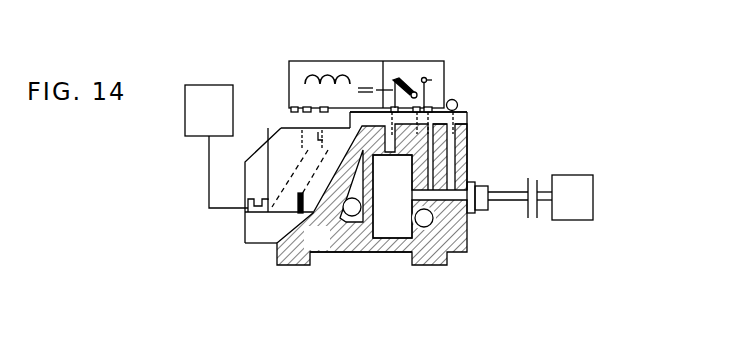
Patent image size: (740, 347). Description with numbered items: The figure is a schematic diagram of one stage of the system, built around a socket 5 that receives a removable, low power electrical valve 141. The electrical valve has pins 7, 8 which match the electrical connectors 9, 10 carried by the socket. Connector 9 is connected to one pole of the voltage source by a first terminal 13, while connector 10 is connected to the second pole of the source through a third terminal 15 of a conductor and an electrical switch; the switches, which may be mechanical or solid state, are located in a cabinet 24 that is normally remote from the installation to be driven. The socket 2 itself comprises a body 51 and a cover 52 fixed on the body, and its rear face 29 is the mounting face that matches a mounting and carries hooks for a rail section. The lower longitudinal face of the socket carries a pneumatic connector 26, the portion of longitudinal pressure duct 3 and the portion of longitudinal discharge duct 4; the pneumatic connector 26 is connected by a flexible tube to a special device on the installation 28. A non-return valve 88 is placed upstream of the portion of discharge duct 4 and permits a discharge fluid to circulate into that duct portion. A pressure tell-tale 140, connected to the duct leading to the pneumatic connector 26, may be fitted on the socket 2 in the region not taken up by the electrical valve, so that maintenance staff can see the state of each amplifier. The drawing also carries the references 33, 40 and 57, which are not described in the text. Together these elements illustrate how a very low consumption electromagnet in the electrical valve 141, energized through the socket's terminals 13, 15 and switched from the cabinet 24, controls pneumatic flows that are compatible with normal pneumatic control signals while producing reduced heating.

The socket 2 is at (577, 31).
The portion of longitudinal pressure duct 3 is at (421, 228).
The portion of longitudinal discharge duct 4 is at (349, 228).
The socket 5 is at (536, 97).
The pin 7 is at (328, 140).
The pin 8 is at (292, 140).
The electrical connector 9 is at (317, 172).
The electrical connector 10 is at (290, 178).
The first terminal 13 is at (300, 204).
The third terminal 15 is at (257, 200).
The cabinet 24 is at (199, 121).
The pneumatic connector 26 is at (485, 201).
The installation 28 is at (562, 206).
The rear face 29 is at (324, 254).
The coil 33 is at (376, 62).
The switch 40 is at (445, 75).
The body 51 is at (460, 145).
The cover 52 is at (467, 118).
The valve chamber 57 is at (380, 208).
The non-return valve 88 is at (307, 248).
The pressure tell-tale 140 is at (457, 103).
The low power electrical valve 141 is at (536, 17).